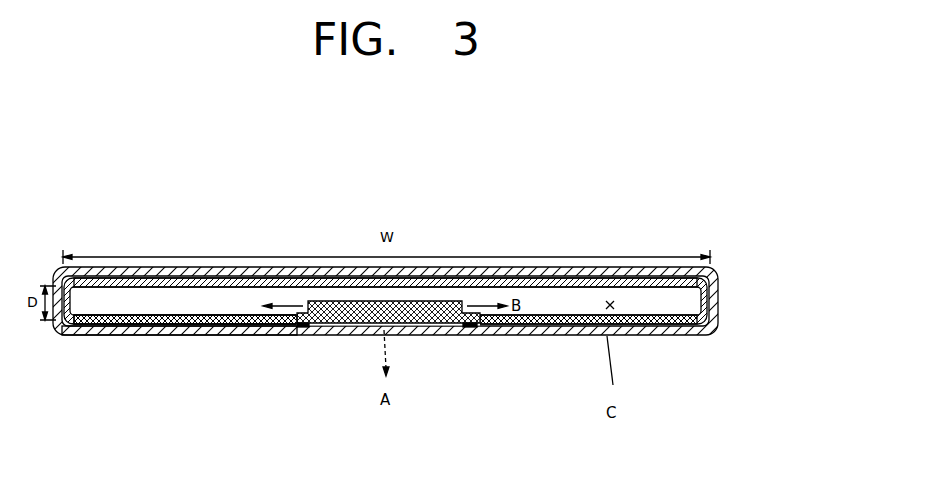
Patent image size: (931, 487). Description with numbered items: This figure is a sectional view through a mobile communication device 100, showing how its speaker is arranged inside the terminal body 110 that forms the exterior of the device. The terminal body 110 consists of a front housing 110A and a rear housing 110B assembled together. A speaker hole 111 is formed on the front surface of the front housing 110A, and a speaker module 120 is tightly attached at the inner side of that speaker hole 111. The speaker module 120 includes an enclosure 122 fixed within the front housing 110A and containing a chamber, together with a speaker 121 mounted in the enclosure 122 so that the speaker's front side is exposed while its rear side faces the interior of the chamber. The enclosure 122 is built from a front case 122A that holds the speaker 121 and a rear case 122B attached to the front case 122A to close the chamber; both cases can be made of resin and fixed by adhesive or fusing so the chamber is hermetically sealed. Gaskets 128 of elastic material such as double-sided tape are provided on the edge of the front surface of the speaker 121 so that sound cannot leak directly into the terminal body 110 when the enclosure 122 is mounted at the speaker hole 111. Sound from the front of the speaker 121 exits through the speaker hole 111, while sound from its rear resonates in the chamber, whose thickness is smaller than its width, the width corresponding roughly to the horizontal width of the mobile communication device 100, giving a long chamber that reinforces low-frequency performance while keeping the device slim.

The mobile communication device 100 is at (700, 193).
The terminal body 110 is at (800, 268).
The front housing 110A is at (722, 320).
The rear housing 110B is at (722, 287).
The speaker hole 111 is at (463, 330).
The speaker module 120 is at (388, 371).
The speaker 121 is at (423, 325).
The enclosure 122 is at (179, 388).
The front case 122A is at (253, 335).
The rear case 122B is at (175, 335).
The gaskets 128 is at (303, 336).